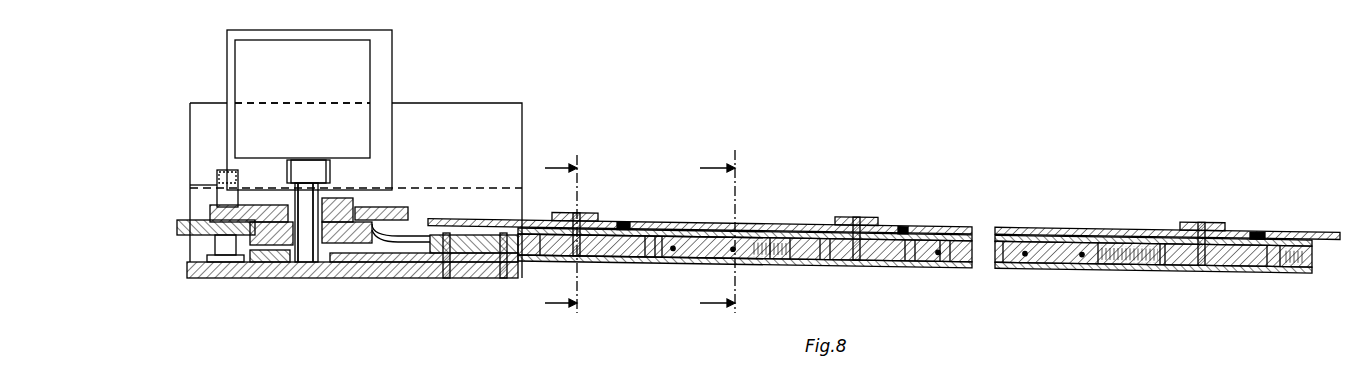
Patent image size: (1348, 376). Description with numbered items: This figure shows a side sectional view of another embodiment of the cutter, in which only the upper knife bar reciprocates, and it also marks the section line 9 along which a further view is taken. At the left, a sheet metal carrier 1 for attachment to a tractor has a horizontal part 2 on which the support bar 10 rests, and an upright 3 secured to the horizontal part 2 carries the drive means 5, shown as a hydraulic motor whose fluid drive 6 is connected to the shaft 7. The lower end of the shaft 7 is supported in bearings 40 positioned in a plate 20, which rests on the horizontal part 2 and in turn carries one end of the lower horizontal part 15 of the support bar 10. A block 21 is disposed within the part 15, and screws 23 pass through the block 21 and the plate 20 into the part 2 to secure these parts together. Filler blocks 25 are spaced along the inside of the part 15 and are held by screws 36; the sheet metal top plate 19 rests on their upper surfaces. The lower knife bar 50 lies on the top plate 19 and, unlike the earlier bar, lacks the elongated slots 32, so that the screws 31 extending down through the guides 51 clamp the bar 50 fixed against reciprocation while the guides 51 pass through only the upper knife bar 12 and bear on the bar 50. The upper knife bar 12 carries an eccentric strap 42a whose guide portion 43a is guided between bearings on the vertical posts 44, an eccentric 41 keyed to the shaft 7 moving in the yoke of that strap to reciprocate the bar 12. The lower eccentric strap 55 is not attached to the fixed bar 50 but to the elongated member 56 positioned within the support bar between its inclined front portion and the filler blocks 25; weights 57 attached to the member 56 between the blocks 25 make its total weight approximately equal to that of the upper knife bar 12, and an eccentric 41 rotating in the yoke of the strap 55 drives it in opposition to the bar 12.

The sheet metal carrier 1 is at (527, 124).
The horizontal part 2 is at (252, 278).
The upright 3 is at (388, 66).
The drive means 5 is at (330, 76).
The fluid drive 6 is at (327, 138).
The shaft 7 is at (306, 228).
The section line 9- 9 is at (561, 239).
The support bar 10 is at (725, 166).
The upper knife bar 12 is at (1085, 228).
The lower horizontal part 15 is at (838, 259).
The top plate 19 is at (490, 232).
The plate 20 is at (397, 262).
The block 21 is at (490, 270).
The screws 23 is at (445, 279).
The filler blocks 25 is at (613, 250).
The screws 31 is at (576, 212).
The elongated slots 32 is at (618, 226).
The screws 36 is at (1282, 294).
The bearings 40 is at (323, 278).
The eccentric 41 is at (277, 246).
The eccentric strap 42a is at (385, 207).
The guide portion 43a is at (257, 206).
The vertical posts 44 is at (222, 190).
The lower knife bar 50 is at (447, 230).
The guides 51 is at (598, 215).
The lower eccentric strap 55 is at (180, 236).
The elongated member 56 is at (407, 242).
The weights 57 is at (700, 252).